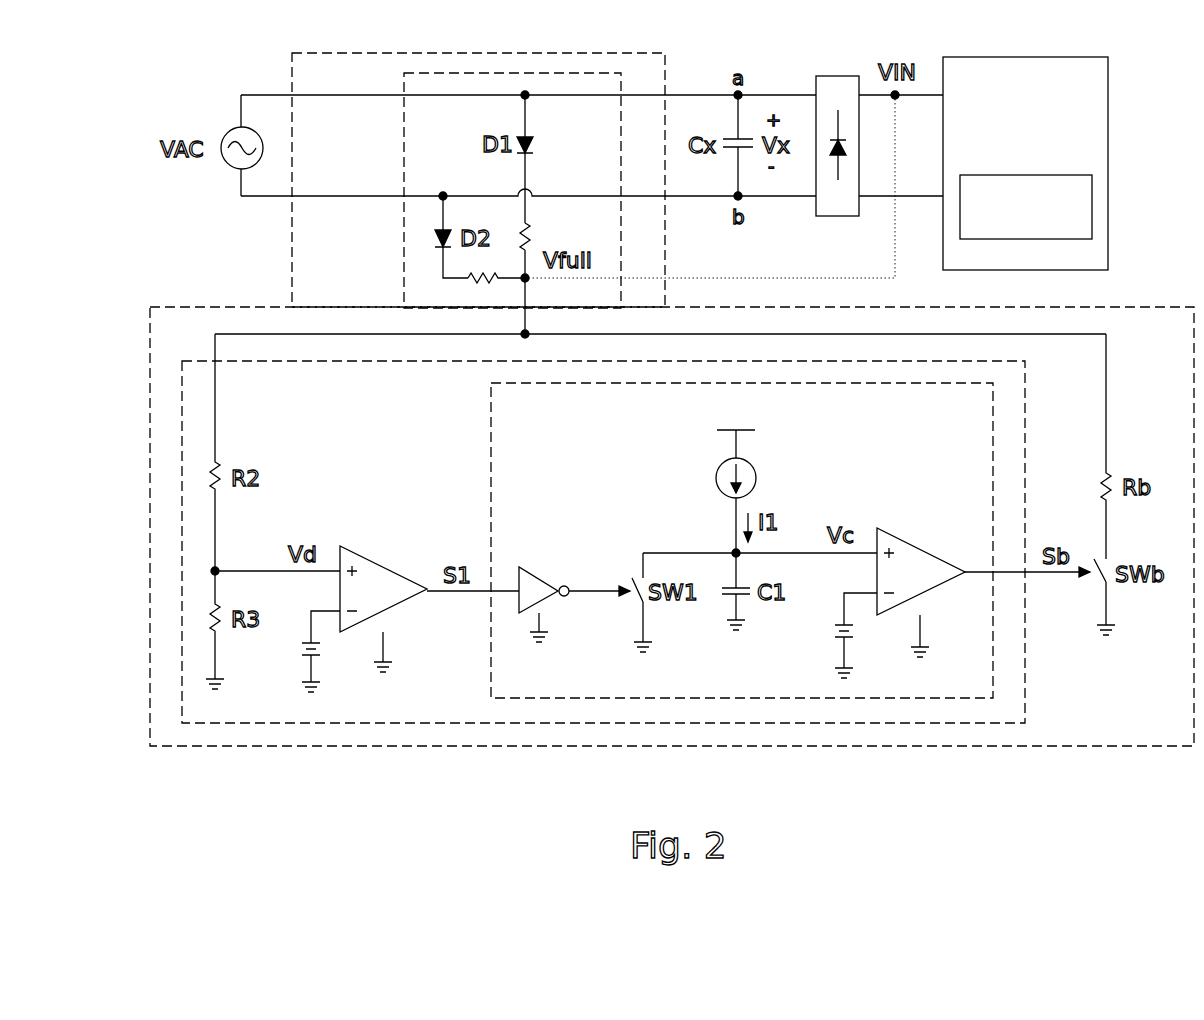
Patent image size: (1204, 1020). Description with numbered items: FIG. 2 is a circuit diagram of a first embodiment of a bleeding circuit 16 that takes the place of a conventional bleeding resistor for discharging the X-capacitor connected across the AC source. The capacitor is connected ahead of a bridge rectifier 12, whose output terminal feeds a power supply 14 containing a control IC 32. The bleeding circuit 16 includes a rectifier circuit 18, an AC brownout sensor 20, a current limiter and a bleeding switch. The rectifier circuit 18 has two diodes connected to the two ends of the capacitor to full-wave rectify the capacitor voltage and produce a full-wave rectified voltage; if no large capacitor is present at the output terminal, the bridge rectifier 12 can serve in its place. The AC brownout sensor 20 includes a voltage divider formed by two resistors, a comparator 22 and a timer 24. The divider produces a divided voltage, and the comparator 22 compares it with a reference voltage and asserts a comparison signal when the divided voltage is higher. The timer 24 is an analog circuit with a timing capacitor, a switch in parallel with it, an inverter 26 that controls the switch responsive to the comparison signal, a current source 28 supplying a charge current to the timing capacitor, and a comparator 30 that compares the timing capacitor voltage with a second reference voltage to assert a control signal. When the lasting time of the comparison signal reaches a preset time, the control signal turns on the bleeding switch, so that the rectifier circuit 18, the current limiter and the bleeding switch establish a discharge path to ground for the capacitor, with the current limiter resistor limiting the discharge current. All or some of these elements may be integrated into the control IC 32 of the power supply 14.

The bridge rectifier 12 is at (838, 216).
The power supply 14 is at (1108, 140).
The bleeding circuit 16 is at (215, 307).
The rectifier circuit 18 is at (405, 243).
The AC brownout sensor 20 is at (1025, 648).
The comparator 22 is at (378, 558).
The timer 24 is at (491, 468).
The inverter 26 is at (540, 577).
The current source 28 is at (716, 478).
The comparator 30 is at (920, 548).
The control IC 32 is at (1092, 205).